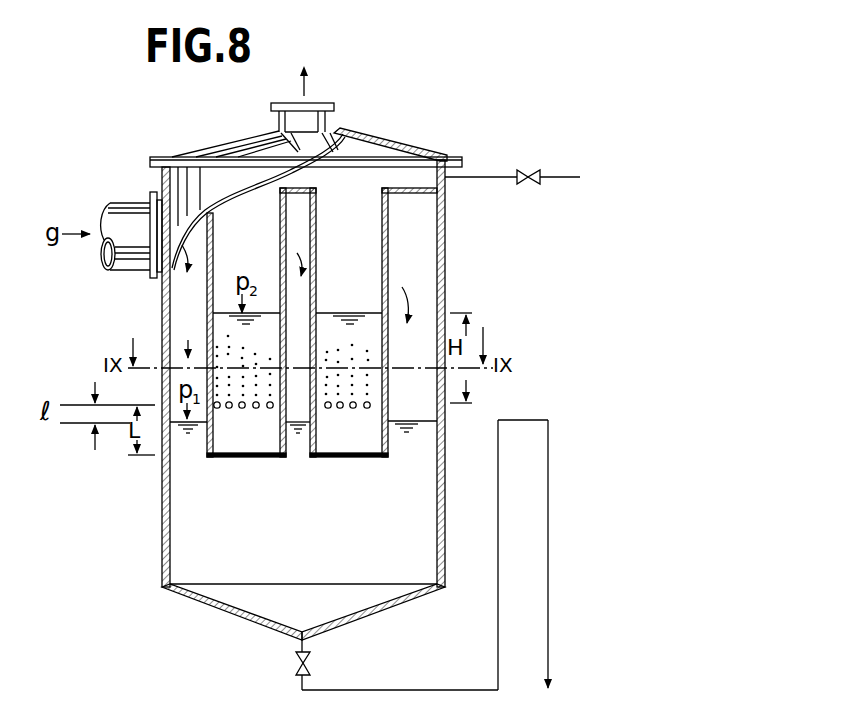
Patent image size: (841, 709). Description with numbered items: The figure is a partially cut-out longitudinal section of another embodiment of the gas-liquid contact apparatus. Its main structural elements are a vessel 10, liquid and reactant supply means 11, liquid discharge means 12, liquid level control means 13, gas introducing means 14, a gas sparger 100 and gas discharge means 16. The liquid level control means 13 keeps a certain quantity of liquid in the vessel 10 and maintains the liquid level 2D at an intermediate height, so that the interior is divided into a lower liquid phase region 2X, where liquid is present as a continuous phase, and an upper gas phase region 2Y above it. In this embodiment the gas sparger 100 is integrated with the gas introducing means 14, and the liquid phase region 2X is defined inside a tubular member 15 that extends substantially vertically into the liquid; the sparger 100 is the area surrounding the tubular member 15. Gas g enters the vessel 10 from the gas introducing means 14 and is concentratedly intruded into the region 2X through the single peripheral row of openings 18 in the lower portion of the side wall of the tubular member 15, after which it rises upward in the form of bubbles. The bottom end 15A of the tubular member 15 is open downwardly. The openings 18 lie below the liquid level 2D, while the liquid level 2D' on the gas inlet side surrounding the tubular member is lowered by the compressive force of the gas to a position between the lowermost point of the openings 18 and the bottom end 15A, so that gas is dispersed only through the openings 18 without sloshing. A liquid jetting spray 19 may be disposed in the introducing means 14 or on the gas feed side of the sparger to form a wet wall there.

The vessel 10 is at (447, 522).
The liquid and reactant supply means 11 is at (498, 177).
The liquid discharge means 12 is at (298, 680).
The liquid level control means 13 is at (542, 420).
The gas introducing means 14 is at (126, 215).
The tubular member 15 is at (388, 227).
The bottom end 15A is at (212, 455).
The gas discharge means 16 is at (328, 119).
The openings 18 is at (230, 406).
The liquid jetting spray 19 is at (174, 240).
The gas sparger 100 is at (177, 298).
The liquid level 2D is at (349, 296).
The liquid level on the gas inlet side 2D' is at (440, 367).
The liquid phase region 2X is at (362, 444).
The gas phase region 2Y is at (360, 238).